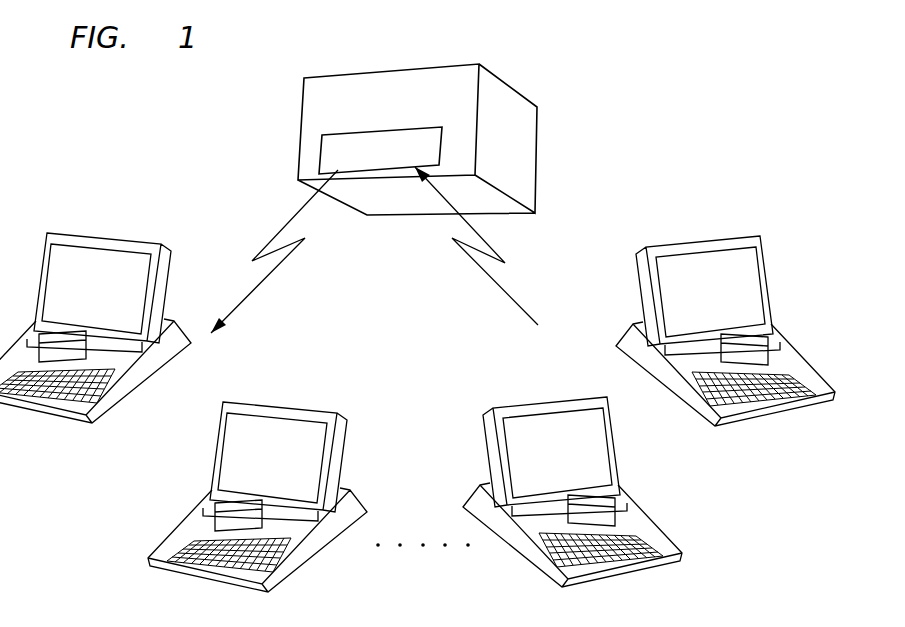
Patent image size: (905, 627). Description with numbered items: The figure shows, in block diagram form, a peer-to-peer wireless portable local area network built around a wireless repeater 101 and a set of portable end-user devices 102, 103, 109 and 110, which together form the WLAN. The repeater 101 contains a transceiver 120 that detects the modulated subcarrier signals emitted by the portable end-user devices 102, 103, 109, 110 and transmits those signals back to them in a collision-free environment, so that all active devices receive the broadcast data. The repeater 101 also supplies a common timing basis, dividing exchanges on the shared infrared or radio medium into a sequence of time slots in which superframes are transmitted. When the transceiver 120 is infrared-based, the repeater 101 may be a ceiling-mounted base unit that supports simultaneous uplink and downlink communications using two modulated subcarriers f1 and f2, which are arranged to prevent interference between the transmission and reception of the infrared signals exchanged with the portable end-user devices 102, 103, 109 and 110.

The wireless repeater 101 is at (504, 142).
The transceiver (TX/RX) 120 is at (326, 152).
The modulated subcarrier f1 is at (268, 242).
The modulated subcarrier f2 is at (502, 283).
The portable end-user device 102 is at (88, 233).
The portable end-user device 103 is at (190, 577).
The portable end-user device 109 is at (683, 557).
The portable end-user device 110 is at (748, 425).